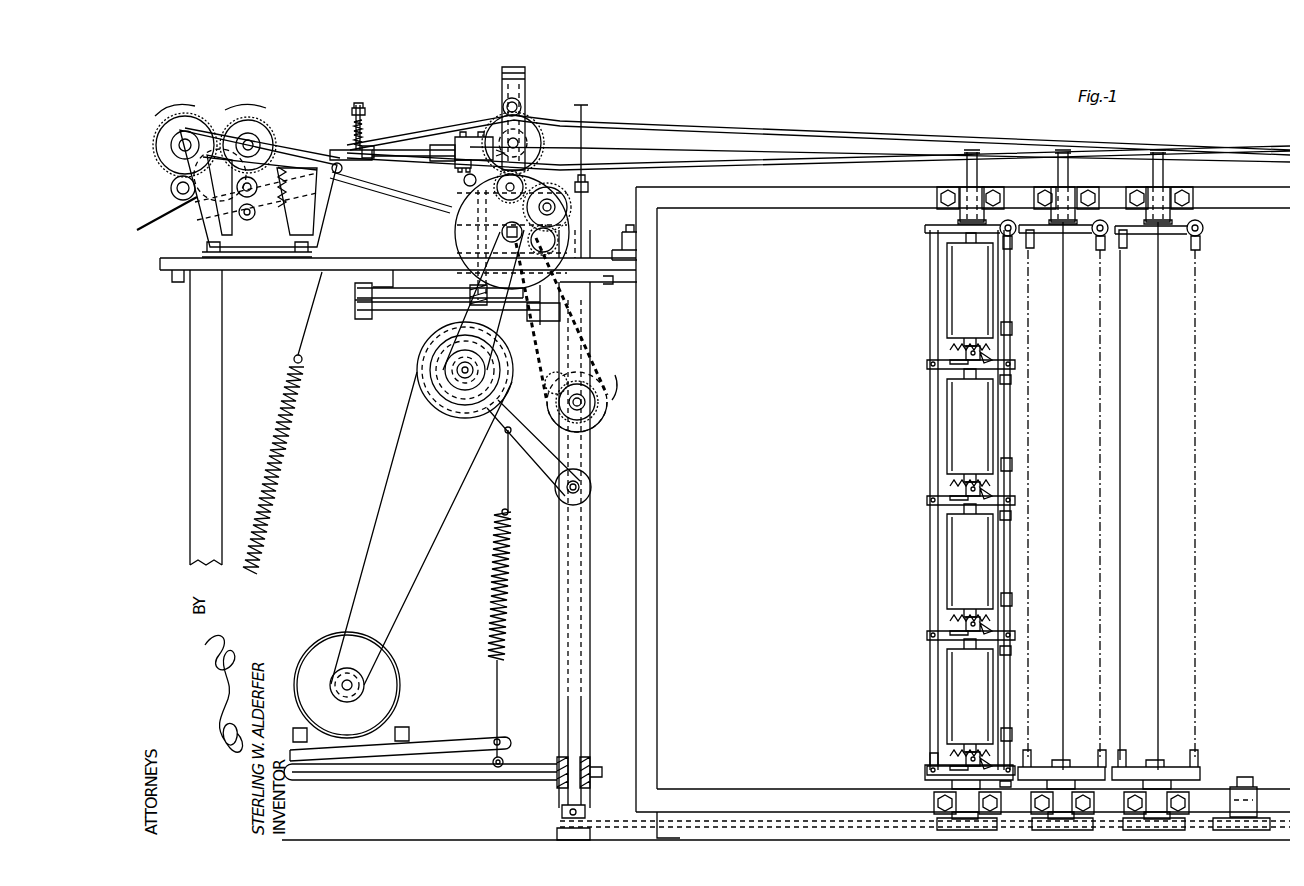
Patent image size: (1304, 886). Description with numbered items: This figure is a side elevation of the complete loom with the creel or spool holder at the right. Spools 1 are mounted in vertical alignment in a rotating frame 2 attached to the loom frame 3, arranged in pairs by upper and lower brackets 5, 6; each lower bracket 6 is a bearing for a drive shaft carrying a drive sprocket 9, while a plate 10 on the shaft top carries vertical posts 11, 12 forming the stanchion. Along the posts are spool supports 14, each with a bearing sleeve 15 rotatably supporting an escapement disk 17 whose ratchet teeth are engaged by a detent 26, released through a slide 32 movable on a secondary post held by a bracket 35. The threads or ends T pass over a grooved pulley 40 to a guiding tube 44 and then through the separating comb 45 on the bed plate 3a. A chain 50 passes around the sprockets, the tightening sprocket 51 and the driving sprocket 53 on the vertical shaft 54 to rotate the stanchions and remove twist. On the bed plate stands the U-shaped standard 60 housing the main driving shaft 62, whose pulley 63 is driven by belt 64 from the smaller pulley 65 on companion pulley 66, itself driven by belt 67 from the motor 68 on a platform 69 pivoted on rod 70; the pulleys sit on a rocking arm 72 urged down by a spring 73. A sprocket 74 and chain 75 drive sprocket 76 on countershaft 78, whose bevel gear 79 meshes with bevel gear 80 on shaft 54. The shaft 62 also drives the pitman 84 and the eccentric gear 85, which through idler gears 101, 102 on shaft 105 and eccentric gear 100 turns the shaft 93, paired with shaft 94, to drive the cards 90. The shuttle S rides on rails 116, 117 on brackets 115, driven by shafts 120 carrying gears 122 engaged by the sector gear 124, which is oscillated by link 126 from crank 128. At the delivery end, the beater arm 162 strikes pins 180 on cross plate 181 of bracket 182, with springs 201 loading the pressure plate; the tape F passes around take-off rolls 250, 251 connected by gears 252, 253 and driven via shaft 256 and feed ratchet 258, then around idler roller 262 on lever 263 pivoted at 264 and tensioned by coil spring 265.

The spool 1 is at (958, 290).
The rotating frame 2 is at (655, 430).
The frame of the loom 3 is at (590, 550).
The bed plate 3a is at (590, 262).
The upper bracket 5 is at (985, 194).
The lower bracket 6 is at (998, 803).
The drive sprocket 9 is at (990, 830).
The plate 10 is at (925, 775).
The vertical post 11 is at (930, 542).
The vertical post 12 is at (1010, 622).
The spool support 14 is at (925, 228).
The bearing sleeve 15 is at (960, 357).
The spool escapement disk 17 is at (955, 348).
The detent 26 is at (982, 355).
The slide 32 is at (1012, 328).
The bracket 35 is at (1012, 248).
The grooved pulley 40 is at (1016, 232).
The guiding tube 44 is at (967, 172).
The separating comb 45 is at (583, 112).
The chain 50 is at (778, 820).
The tightening sprocket 51 is at (1225, 815).
The driving sprocket 53 is at (585, 808).
The vertical shaft 54 is at (578, 730).
The U-shaped standard 60 is at (525, 83).
The main horizontal driving shaft 62 is at (507, 235).
The pulley 63 is at (455, 238).
The belt 64 is at (445, 310).
The smaller pulley 65 is at (470, 402).
The companion pulley 66 is at (445, 410).
The belt 67 is at (440, 530).
The motor 68 is at (400, 690).
The platform 69 is at (462, 740).
The rod 70 is at (498, 767).
The rocking arm 72 is at (548, 480).
The spring 73 is at (508, 614).
The sprocket 74 is at (540, 255).
The chain 75 is at (590, 380).
The sprocket 76 is at (600, 425).
The countershaft 78 is at (598, 383).
The bevel gear 79 is at (542, 430).
The bevel gear 80 is at (555, 376).
The pitman 84 is at (392, 195).
The eccentrically mounted gear 85 is at (546, 232).
The card 90 is at (530, 130).
The shaft 93 is at (480, 177).
The shaft 94 is at (521, 104).
The eccentric gear 100 is at (470, 195).
The eccentric idler gear 101 is at (543, 167).
The eccentric idler gear 102 is at (572, 207).
The shaft 105 is at (589, 187).
The bracket 115 is at (517, 141).
The arc-shaped rail 116 is at (455, 168).
The rail 117 is at (472, 137).
The shaft 120 is at (457, 221).
The gear 122 is at (480, 305).
The sector gear 124 is at (432, 290).
The link 126 is at (410, 314).
The crank 128 is at (548, 322).
The beater arm 162 is at (370, 147).
The pin 180 is at (362, 115).
The cross plate 181 is at (340, 150).
The bracket 182 is at (330, 195).
The spring 201 is at (358, 105).
The take off roll 250 is at (270, 130).
The take off roll 251 is at (203, 115).
The gear 252 is at (262, 120).
The gear 253 is at (220, 120).
The shaft 256 is at (258, 186).
The feed ratchet 258 is at (287, 163).
The idler roller 262 is at (172, 188).
The lever 263 is at (300, 215).
The pivot 264 is at (215, 220).
The coil spring 265 is at (282, 497).
The fabric or tape F is at (152, 228).
The shuttle S is at (432, 142).
The threads or ends T is at (760, 129).